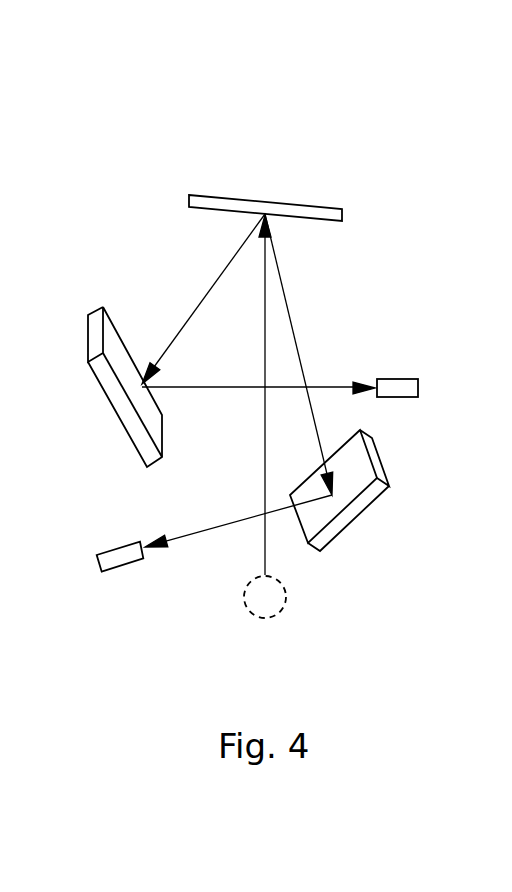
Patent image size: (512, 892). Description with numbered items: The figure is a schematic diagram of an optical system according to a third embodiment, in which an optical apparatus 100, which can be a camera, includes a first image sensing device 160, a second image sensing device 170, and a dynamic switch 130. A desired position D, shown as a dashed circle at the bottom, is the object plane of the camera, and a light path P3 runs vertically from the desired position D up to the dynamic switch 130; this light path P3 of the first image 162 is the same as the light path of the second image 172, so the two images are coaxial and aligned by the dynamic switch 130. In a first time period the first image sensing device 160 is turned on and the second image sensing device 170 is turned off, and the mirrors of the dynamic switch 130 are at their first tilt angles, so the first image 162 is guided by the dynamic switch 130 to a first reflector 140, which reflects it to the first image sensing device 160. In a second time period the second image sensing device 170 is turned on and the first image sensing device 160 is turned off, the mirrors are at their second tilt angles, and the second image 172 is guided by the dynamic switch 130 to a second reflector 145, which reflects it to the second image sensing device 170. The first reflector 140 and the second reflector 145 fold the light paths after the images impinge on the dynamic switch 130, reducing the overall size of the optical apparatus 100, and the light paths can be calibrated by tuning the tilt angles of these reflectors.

The optical apparatus 100 is at (123, 87).
The dynamic switch 130 is at (293, 208).
The first reflector 140 is at (90, 312).
The second reflector 145 is at (357, 508).
The first image sensing device 160 is at (398, 385).
The first image 162 is at (324, 378).
The second image sensing device 170 is at (102, 552).
The second image 172 is at (186, 525).
The desired position D is at (278, 592).
The light path P3 is at (250, 533).